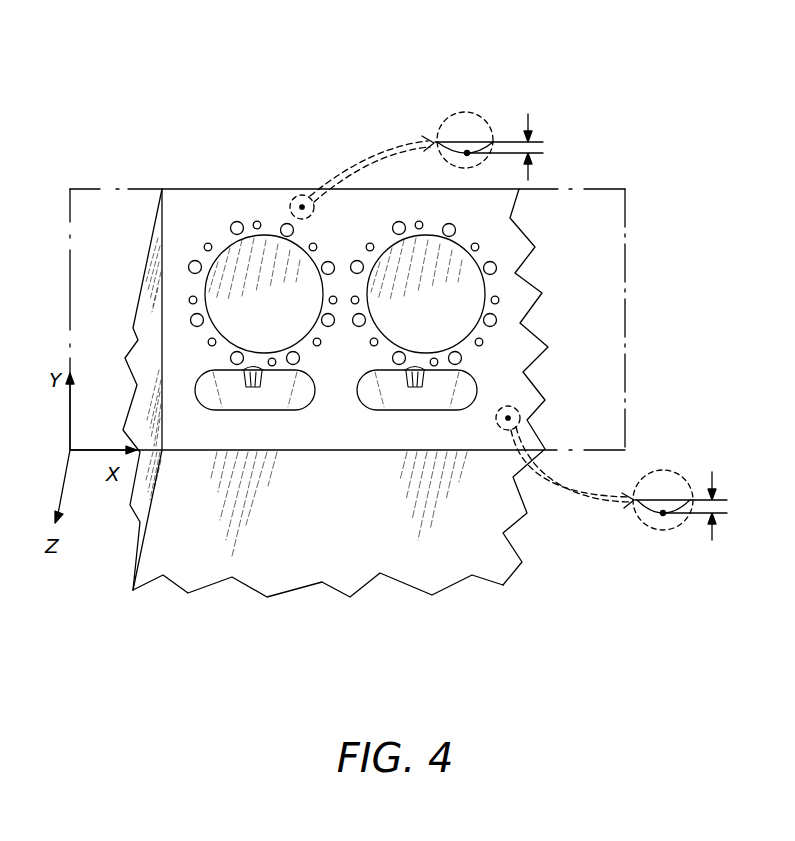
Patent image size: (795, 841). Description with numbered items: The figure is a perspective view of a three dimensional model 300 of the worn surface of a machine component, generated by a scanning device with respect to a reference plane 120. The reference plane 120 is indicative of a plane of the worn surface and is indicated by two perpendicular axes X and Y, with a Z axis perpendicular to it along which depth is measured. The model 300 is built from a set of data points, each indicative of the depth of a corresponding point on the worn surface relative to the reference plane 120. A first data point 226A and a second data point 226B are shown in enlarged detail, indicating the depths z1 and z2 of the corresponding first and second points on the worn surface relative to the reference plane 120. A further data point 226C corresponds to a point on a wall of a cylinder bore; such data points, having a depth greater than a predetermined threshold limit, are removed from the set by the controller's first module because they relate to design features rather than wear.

The three dimensional model 300 is at (112, 110).
The reference plane 120 is at (88, 189).
The first data point 226A is at (305, 196).
The second data point 226B is at (512, 414).
The data point 226C is at (250, 275).
The depth z1 is at (504, 146).
The depth z2 is at (696, 505).